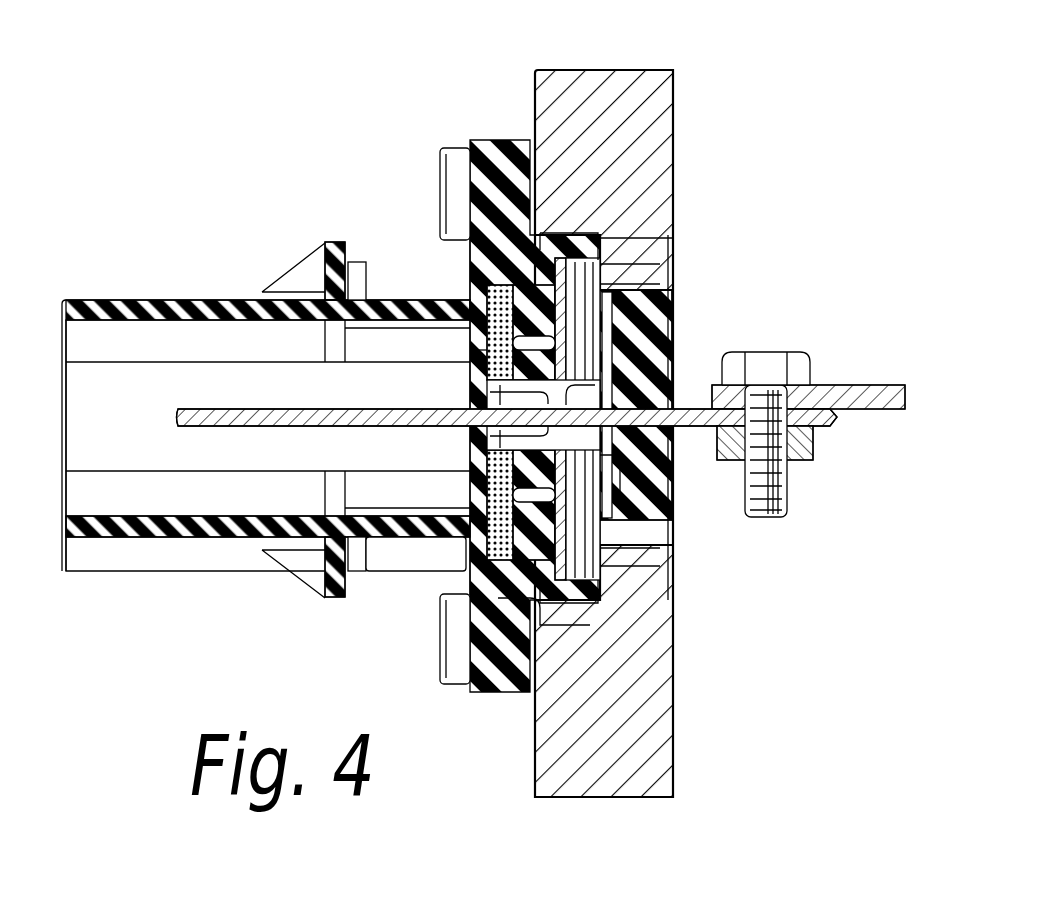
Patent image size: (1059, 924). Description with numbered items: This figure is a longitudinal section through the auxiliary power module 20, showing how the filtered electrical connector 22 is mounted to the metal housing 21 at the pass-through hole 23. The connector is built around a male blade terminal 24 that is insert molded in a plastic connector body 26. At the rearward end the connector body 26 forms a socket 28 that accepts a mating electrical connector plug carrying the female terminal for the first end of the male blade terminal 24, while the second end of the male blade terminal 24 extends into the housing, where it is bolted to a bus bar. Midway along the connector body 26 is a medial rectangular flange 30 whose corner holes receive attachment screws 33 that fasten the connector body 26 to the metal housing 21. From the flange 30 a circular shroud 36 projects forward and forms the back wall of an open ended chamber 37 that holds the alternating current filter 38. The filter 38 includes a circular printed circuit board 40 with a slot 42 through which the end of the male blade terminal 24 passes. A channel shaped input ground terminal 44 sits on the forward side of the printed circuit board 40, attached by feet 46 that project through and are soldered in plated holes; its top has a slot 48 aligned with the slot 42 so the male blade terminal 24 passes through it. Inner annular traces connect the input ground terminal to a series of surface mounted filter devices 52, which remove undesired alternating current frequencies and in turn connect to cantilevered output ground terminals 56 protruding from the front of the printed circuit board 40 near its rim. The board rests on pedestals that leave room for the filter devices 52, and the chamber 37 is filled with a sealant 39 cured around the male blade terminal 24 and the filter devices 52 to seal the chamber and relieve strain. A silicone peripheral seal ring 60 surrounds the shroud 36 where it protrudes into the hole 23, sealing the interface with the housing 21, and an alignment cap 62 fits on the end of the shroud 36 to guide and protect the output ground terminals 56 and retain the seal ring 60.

The auxiliary power module 20 is at (672, 62).
The metal housing 21 is at (606, 92).
The filtered electrical connector 22 is at (444, 134).
The pass-through hole 23 is at (672, 240).
The male blade terminal 24 is at (272, 428).
The connector body 26 is at (100, 302).
The socket 28 is at (190, 298).
The medial rectangular flange 30 is at (494, 140).
The attachment screws 33 is at (438, 174).
The circular shroud 36 is at (548, 236).
The chamber 37 is at (478, 562).
The alternating current filter 38 is at (555, 272).
The sealant 39 is at (470, 352).
The printed circuit board 40 is at (585, 520).
The slot 42 is at (605, 385).
The input ground terminal 44 is at (680, 452).
The feet 46 is at (487, 395).
The slot 48 is at (712, 398).
The surface mounted filter devices 52 is at (490, 302).
The cantilevered output ground terminals 56 is at (640, 289).
The peripheral seal ring 60 is at (545, 602).
The alignment cap 62 is at (672, 520).